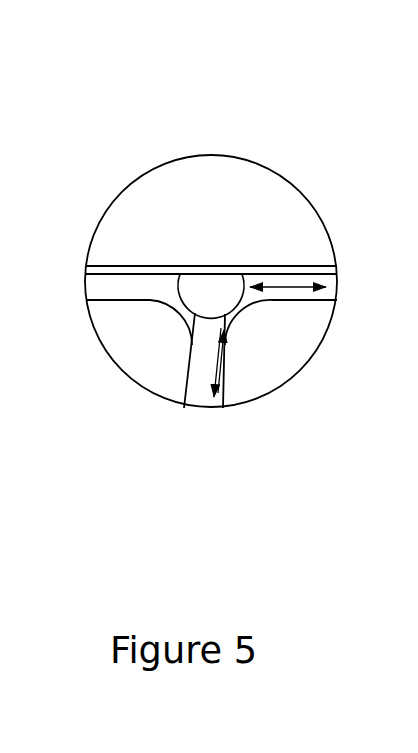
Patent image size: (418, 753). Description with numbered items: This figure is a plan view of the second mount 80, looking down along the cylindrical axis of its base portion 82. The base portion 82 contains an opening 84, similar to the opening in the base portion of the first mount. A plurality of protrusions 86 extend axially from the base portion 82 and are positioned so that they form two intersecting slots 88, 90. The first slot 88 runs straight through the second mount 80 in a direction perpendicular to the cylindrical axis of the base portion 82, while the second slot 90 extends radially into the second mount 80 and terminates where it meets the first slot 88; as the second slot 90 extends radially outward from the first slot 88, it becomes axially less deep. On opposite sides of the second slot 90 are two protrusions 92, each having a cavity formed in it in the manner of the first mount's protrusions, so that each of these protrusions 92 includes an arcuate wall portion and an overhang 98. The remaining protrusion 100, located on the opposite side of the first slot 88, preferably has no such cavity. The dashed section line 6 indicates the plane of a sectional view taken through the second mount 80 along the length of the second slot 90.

The second mount 80 is at (311, 130).
The section line 6- 6 is at (188, 500).
The base portion 82 is at (88, 297).
The opening 84 is at (196, 288).
The protrusions 86 is at (120, 223).
The first slot 88 is at (292, 287).
The second slot 90 is at (228, 356).
The protrusions 92 is at (117, 335).
The overhang 98 is at (108, 317).
The remaining protrusion 100 is at (174, 183).